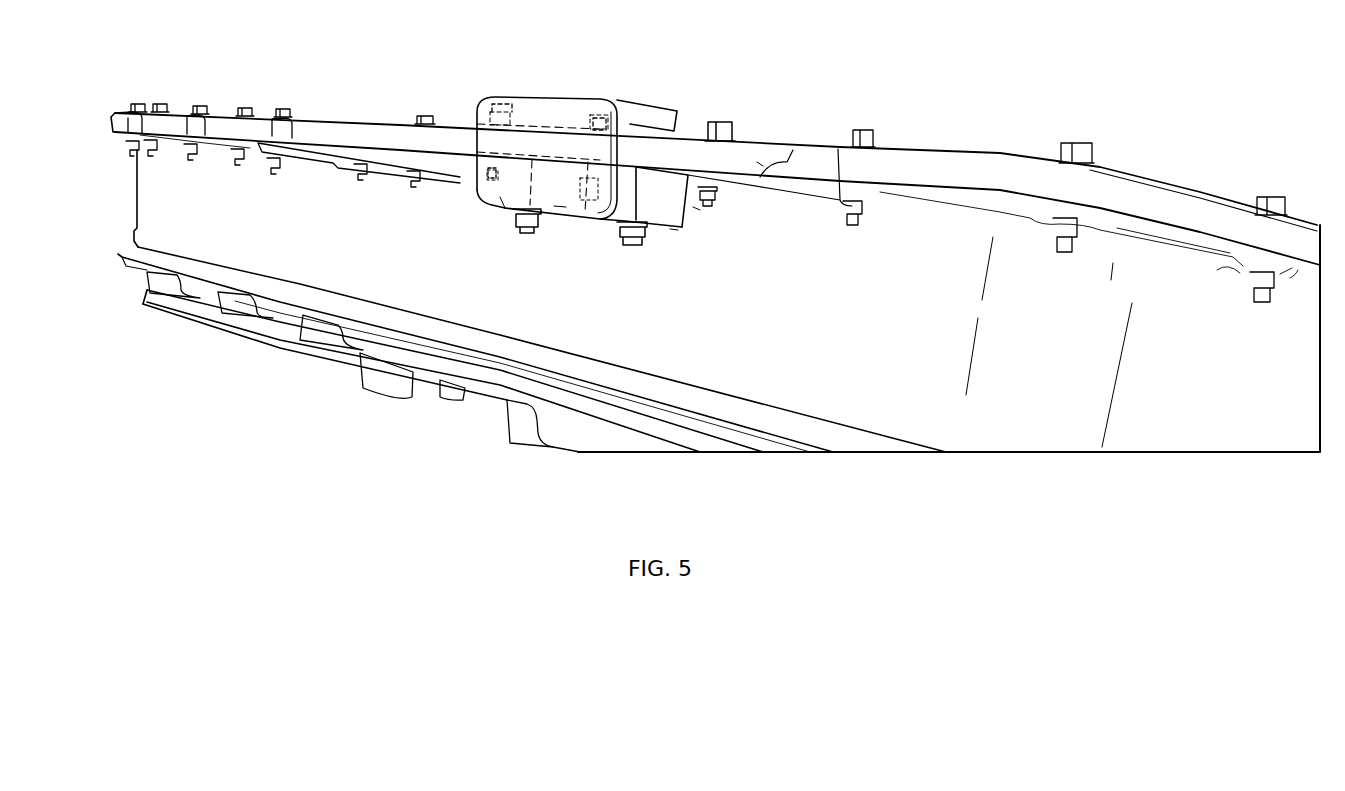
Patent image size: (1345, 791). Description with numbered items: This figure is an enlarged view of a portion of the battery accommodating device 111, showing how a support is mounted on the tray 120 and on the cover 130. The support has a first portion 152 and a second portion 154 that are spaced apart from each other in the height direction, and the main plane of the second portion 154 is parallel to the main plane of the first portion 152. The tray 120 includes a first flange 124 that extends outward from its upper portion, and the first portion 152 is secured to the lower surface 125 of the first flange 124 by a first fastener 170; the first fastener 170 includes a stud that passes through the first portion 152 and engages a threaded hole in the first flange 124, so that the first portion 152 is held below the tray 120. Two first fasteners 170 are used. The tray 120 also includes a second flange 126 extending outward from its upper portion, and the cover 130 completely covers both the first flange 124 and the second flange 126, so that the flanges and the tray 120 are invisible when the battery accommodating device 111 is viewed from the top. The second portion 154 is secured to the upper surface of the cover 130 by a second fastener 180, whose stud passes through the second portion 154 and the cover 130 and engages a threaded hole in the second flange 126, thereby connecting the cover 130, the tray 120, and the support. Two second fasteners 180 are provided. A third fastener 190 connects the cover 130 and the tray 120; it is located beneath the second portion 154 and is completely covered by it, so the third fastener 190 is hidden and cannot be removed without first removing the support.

The battery accommodating device 111 is at (1078, 72).
The tray 120 is at (136, 194).
The first flange 124 is at (500, 197).
The lower surface 125 is at (560, 210).
The second flange 126 is at (481, 164).
The cover 130 is at (899, 138).
The first portion 152 is at (598, 222).
The second portion 154 is at (598, 98).
The first fastener 170 is at (528, 226).
The second fastener 180 is at (498, 117).
The third fastener 190 is at (601, 118).